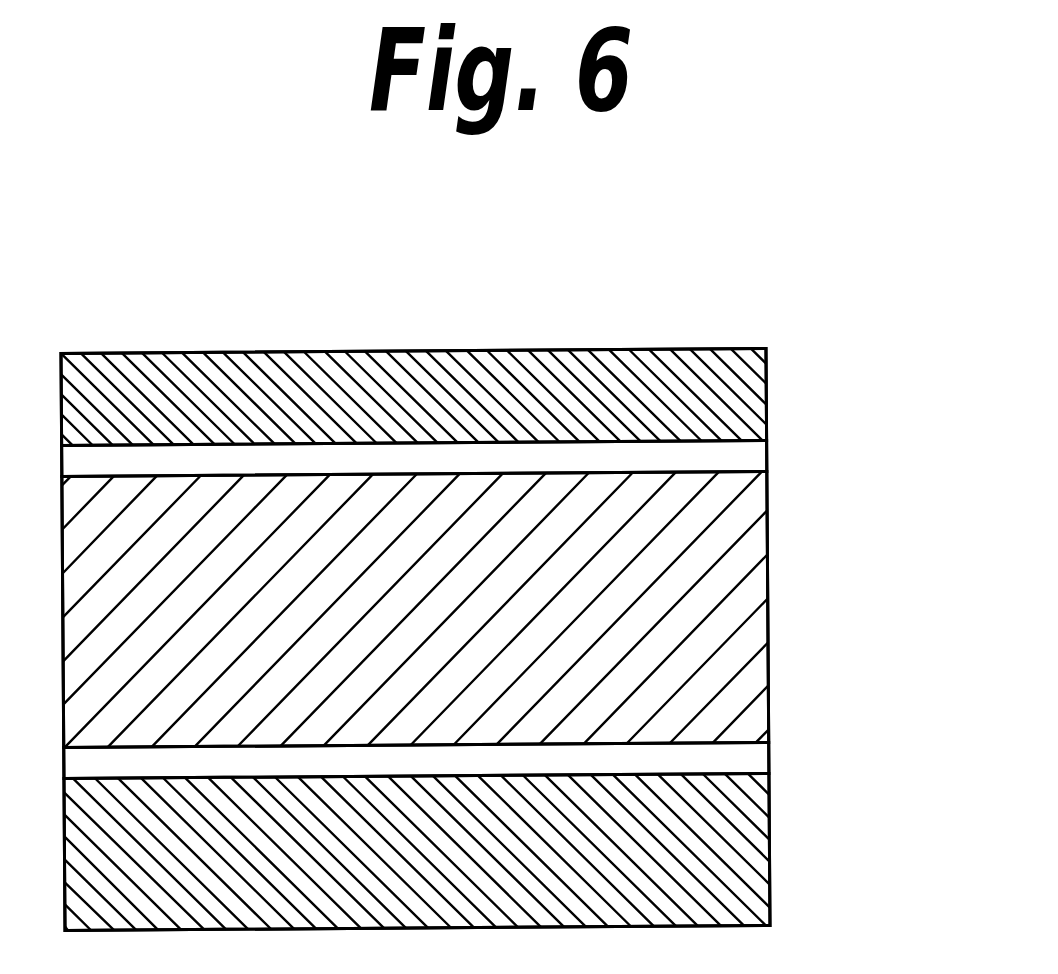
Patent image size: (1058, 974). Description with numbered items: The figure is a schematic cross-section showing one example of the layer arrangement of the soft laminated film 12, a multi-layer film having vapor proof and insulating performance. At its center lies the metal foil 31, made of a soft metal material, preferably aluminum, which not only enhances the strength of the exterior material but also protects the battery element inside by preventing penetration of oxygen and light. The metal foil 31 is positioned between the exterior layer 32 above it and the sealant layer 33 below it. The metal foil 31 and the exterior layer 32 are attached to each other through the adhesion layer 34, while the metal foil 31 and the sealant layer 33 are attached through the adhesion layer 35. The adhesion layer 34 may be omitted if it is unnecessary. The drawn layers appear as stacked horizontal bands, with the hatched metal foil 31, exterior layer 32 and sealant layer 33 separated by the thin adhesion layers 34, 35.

The soft laminated film 12 is at (441, 260).
The metal foil 31 is at (768, 600).
The exterior layer 32 is at (768, 388).
The sealant layer 33 is at (768, 842).
The adhesion layer 34 is at (768, 448).
The adhesion layer 35 is at (768, 750).